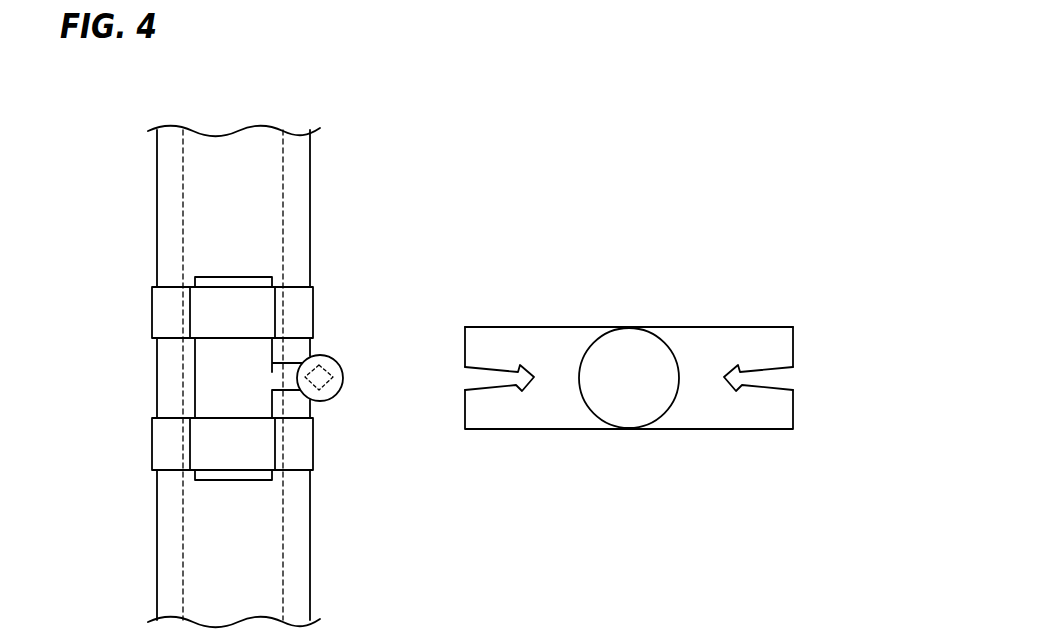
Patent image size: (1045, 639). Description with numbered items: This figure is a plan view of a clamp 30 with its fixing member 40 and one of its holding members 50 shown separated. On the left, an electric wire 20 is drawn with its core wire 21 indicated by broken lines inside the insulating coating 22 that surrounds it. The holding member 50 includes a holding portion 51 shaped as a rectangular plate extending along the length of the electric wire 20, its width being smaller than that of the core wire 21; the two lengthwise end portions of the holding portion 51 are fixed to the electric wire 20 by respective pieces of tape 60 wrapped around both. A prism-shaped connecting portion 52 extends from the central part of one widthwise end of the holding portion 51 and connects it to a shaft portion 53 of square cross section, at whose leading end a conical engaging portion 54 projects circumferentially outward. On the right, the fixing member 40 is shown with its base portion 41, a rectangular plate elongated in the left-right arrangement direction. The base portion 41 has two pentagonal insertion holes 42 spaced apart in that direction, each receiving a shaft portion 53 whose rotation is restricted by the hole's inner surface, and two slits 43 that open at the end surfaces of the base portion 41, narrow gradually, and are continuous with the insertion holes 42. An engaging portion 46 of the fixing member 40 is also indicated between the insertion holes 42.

The electric wire 20 is at (265, 377).
The core wire 21 is at (284, 176).
The insulating coating 22 is at (310, 208).
The clamp 30 is at (632, 317).
The fixing member 40 is at (632, 340).
The base portion 41 is at (682, 332).
The insertion hole 42 is at (520, 368).
The slit 43 is at (493, 382).
The engaging portion 46 is at (625, 340).
The holding member 50 is at (258, 378).
The holding portion 51 is at (200, 380).
The connecting portion 52 is at (276, 370).
The shaft portion 53 is at (344, 366).
The engaging portion 54 is at (329, 399).
The tape 60 is at (155, 313).